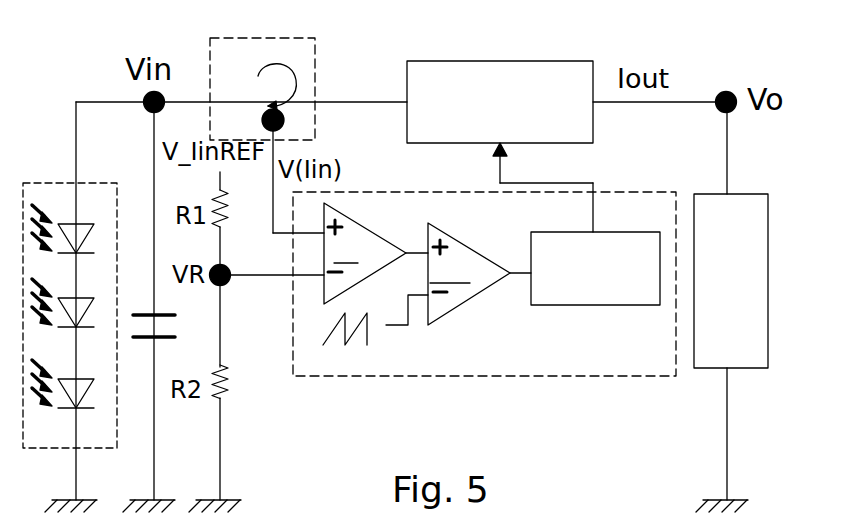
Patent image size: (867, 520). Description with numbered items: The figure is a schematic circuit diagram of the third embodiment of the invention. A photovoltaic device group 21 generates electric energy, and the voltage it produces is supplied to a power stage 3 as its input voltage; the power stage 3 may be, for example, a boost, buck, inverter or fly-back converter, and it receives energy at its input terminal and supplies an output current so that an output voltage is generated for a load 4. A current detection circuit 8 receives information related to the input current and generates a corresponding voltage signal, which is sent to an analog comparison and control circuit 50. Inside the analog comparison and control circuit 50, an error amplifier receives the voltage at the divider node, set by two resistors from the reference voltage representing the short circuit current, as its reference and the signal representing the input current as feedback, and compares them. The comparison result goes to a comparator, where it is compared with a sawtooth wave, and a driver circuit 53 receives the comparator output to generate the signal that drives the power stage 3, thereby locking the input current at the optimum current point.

The photovoltaic device group 21 is at (62, 182).
The current detection circuit 8 is at (315, 138).
The power stage 3 is at (563, 60).
The analog comparison and control circuit 50 is at (484, 318).
The driver circuit 53 is at (588, 305).
The load 4 is at (743, 368).